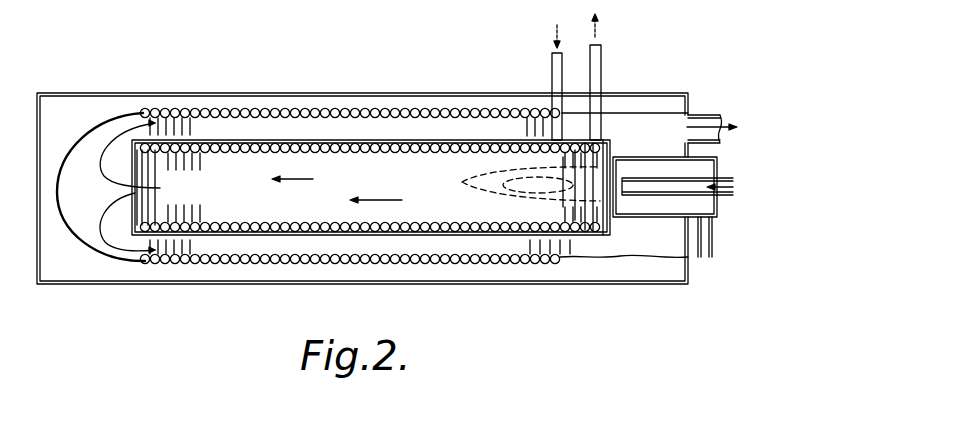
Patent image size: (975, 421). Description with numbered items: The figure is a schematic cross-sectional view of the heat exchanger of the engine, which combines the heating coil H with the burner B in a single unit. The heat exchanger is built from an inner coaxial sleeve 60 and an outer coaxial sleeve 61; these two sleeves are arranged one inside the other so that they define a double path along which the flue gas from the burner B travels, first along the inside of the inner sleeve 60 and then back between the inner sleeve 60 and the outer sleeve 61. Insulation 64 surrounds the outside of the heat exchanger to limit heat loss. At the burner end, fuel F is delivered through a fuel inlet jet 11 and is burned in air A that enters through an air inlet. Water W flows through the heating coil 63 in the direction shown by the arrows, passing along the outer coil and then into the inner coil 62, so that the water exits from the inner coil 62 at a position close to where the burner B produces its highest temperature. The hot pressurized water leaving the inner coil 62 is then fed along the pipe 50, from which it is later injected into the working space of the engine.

The pipe 50 is at (602, 68).
The inner coaxial sleeve 60 is at (632, 218).
The fuel supply line 11 is at (660, 196).
The outer coaxial sleeve 61 is at (462, 285).
The inner coil 62 is at (216, 236).
The heating coil 63 is at (247, 263).
The insulation 64 is at (62, 278).
The heating coil H is at (443, 133).
The burner B is at (607, 181).
The water W is at (616, 17).
The fuel F is at (731, 196).
The air A is at (705, 246).